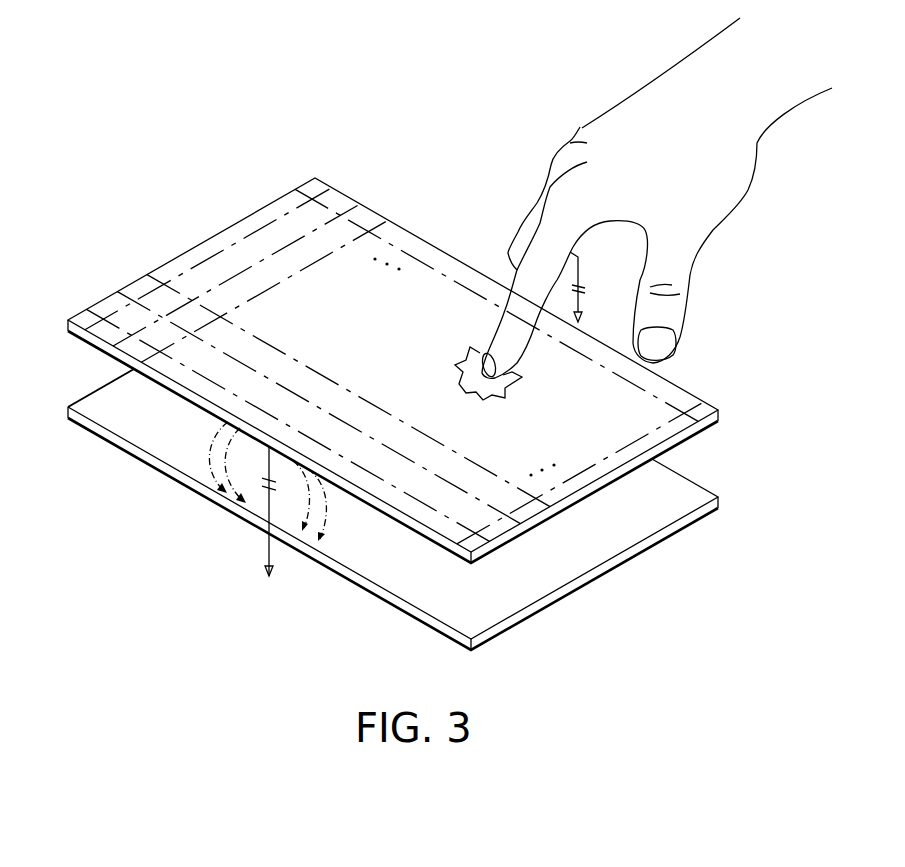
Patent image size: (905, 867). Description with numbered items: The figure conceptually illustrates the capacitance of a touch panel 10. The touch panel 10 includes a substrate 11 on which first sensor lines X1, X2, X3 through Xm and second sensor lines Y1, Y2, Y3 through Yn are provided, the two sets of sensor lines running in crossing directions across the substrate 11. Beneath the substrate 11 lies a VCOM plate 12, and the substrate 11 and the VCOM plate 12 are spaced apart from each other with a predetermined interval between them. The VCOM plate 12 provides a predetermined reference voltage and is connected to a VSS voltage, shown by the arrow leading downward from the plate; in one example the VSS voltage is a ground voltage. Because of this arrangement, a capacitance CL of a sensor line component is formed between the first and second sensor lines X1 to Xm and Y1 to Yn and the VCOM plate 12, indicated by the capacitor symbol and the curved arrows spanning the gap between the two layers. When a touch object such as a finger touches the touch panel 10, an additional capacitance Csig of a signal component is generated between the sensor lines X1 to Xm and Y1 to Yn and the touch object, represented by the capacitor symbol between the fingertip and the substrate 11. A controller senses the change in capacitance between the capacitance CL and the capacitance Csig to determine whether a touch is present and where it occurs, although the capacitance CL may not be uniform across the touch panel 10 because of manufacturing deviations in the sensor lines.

The touch panel 10 is at (142, 159).
The substrate 11 is at (220, 240).
The VCOM plate 12 is at (88, 400).
The first sensor line X1 is at (334, 190).
The first sensor line X2 is at (362, 206).
The first sensor line X3 is at (391, 222).
The first sensor line Xm is at (703, 402).
The second sensor line Y1 is at (495, 546).
The second sensor line Y2 is at (525, 528).
The second sensor line Y3 is at (555, 511).
The second sensor line Yn is at (706, 426).
The capacitance of a signal component Csig is at (600, 287).
The capacitance of a sensor line component CL is at (267, 499).
The VSS voltage VSS is at (266, 584).